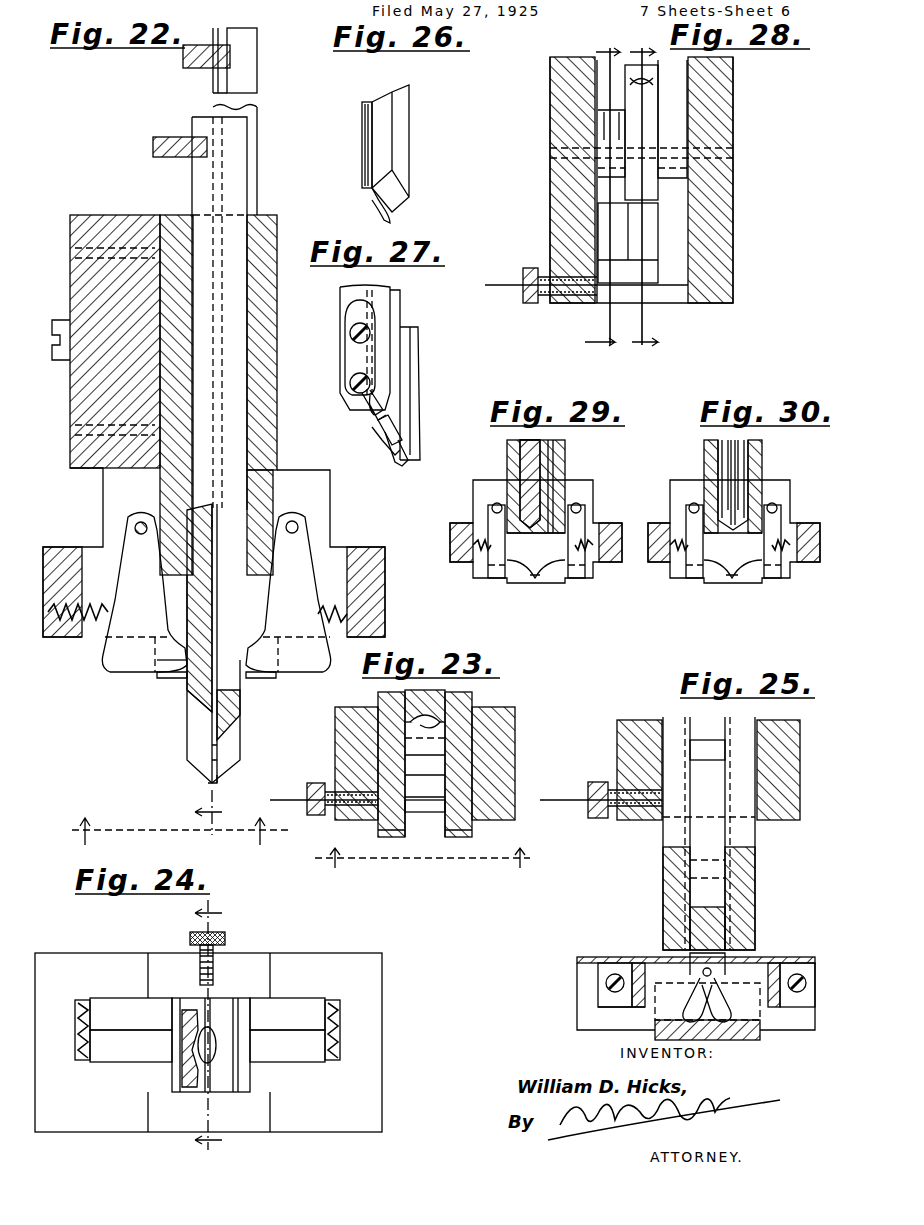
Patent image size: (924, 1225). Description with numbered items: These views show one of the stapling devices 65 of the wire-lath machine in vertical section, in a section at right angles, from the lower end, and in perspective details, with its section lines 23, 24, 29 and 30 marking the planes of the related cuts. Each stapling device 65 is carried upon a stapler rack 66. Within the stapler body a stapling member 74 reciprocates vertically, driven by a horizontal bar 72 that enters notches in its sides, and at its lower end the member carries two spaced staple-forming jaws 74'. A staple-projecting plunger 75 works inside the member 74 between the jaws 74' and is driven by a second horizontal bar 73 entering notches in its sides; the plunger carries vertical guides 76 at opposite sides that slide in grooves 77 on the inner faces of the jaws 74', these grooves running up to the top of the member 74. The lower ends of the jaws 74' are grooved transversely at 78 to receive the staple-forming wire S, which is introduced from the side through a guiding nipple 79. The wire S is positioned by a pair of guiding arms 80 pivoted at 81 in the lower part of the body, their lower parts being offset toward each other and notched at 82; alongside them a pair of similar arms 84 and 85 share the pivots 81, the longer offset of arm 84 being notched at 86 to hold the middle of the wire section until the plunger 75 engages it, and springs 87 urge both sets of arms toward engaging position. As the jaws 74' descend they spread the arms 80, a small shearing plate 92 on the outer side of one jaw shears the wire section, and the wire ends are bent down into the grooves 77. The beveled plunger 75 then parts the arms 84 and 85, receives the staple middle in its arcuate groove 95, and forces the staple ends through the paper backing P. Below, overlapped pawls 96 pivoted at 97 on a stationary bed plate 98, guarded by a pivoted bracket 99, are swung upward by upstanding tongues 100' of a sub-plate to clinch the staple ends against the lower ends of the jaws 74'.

In FIG. 22, the section line 23— 23 is at (195, 606).
In FIG. 24, the section line 23— 23 is at (222, 1029).
In FIG. 22, the section line 24— 24 is at (164, 831).
In FIG. 23, the section line 24— 24 is at (418, 869).
In FIG. 28, the section line 29— 29 is at (598, 200).
In FIG. 28, the section line 30— 30 is at (650, 200).
In FIG. 22, the stapling device 65 is at (172, 215).
In FIG. 28, the stapling device 65 is at (733, 180).
In FIG. 30, the stapling device 65 is at (704, 460).
In FIG. 23, the stapling device 65 is at (500, 728).
In FIG. 25, the stapling device 65 is at (625, 720).
In FIG. 24, the stapling device 65 is at (385, 1015).
In FIG. 22, the stapler rack 66 is at (90, 215).
In FIG. 22, the horizontal bar 72 is at (153, 140).
In FIG. 22, the horizontal bar 73 is at (183, 58).
In FIG. 22, the stapling member 74 is at (243, 340).
In FIG. 22, the staple-forming jaw 74' is at (190, 721).
In FIG. 27, the staple-forming jaw 74' is at (414, 375).
In FIG. 28, the staple-forming jaw 74' is at (646, 181).
In FIG. 29, the staple-forming jaw 74' is at (512, 486).
In FIG. 30, the staple-forming jaw 74' is at (774, 475).
In FIG. 23, the staple-forming jaw 74' is at (422, 791).
In FIG. 25, the staple-forming jaw 74' is at (709, 833).
In FIG. 24, the staple-forming jaw 74' is at (215, 1026).
In FIG. 22, the staple-projecting plunger 75 is at (235, 74).
In FIG. 26, the staple-projecting plunger 75 is at (400, 116).
In FIG. 28, the staple-projecting plunger 75 is at (652, 72).
In FIG. 30, the staple-projecting plunger 75 is at (740, 448).
In FIG. 23, the staple-projecting plunger 75 is at (440, 692).
In FIG. 24, the staple-projecting plunger 75 is at (216, 1044).
In FIG. 22, the vertical guide 76 is at (187, 710).
In FIG. 26, the vertical guide 76 is at (365, 129).
In FIG. 27, the vertical guide 76 is at (396, 468).
In FIG. 22, the groove 77 is at (215, 738).
In FIG. 27, the groove 77 is at (388, 428).
In FIG. 30, the groove 77 is at (735, 466).
In FIG. 22, the transverse groove 78 is at (208, 782).
In FIG. 27, the transverse groove 78 is at (365, 412).
In FIG. 28, the guiding nipple 79 is at (542, 300).
In FIG. 23, the guiding nipple 79 is at (324, 790).
In FIG. 25, the guiding nipple 79 is at (598, 782).
In FIG. 22, the guiding arm 80 is at (135, 592).
In FIG. 28, the guiding arm 80 is at (597, 225).
In FIG. 29, the guiding arm 80 is at (492, 572).
In FIG. 24, the guiding arm 80 is at (110, 1000).
In FIG. 22, the pivot 81 is at (135, 527).
In FIG. 28, the pivot 81 is at (630, 242).
In FIG. 29, the pivot 81 is at (492, 508).
In FIG. 30, the pivot 81 is at (689, 508).
In FIG. 22, the notch 82 is at (160, 672).
In FIG. 30, the wire holding arm 84 is at (690, 572).
In FIG. 24, the wire holding arm 84 is at (110, 1060).
In FIG. 30, the wire holding arm 85 is at (775, 578).
In FIG. 24, the wire holding arm 85 is at (310, 1060).
In FIG. 30, the notch 86 is at (730, 583).
In FIG. 22, the spring 87 is at (80, 625).
In FIG. 24, the spring 87 is at (75, 1040).
In FIG. 27, the shearing plate 92 is at (352, 370).
In FIG. 26, the arcuate groove 95 is at (382, 212).
In FIG. 23, the arcuate groove 95 is at (450, 716).
In FIG. 25, the clinching pawl 96 is at (734, 1000).
In FIG. 25, the pivot 97 is at (707, 1000).
In FIG. 25, the bed plate 98 is at (582, 970).
In FIG. 25, the bracket 99 is at (598, 996).
In FIG. 25, the upstanding tongue 100' is at (679, 1025).
In FIG. 25, the paper backing P is at (600, 957).
In FIG. 22, the staple-forming wire S is at (218, 750).
In FIG. 28, the staple-forming wire S is at (584, 301).
In FIG. 23, the staple-forming wire S is at (435, 822).
In FIG. 25, the staple-forming wire S is at (770, 930).
In FIG. 24, the staple-forming wire S is at (213, 1052).